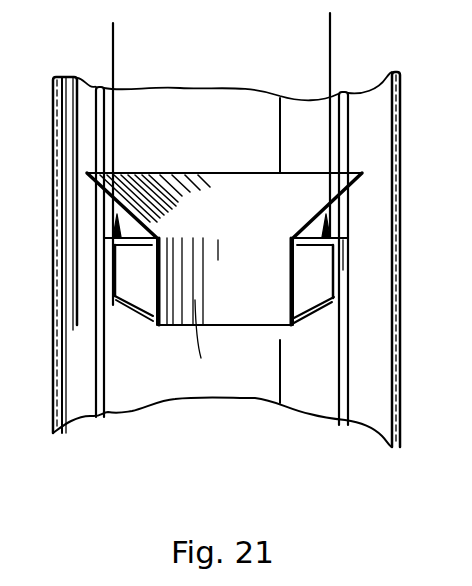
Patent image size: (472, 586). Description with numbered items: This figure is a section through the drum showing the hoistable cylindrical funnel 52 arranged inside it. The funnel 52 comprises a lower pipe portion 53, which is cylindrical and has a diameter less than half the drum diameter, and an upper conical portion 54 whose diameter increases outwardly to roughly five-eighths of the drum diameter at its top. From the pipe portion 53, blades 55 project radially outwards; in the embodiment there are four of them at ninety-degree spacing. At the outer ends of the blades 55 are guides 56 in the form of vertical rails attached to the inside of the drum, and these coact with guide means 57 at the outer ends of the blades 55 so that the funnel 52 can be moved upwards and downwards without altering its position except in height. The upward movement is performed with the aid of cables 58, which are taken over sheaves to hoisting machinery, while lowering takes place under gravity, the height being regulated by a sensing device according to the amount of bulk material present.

The cylindrical funnel 52 is at (224, 176).
The lower pipe portion 53 is at (218, 328).
The upper conical portion 54 is at (317, 213).
The blades 55 is at (317, 284).
The guides 56 is at (106, 356).
The guide means 57 is at (248, 301).
The cables 58 is at (117, 40).